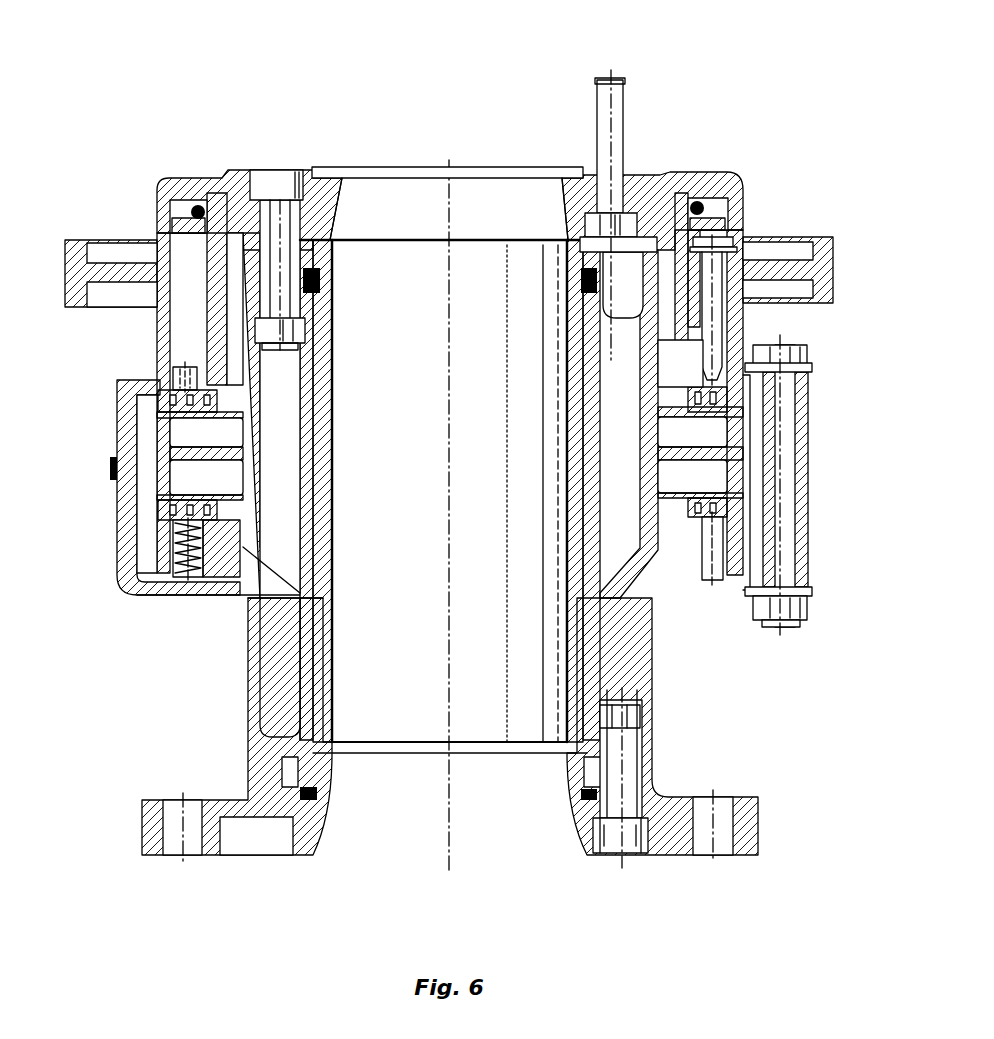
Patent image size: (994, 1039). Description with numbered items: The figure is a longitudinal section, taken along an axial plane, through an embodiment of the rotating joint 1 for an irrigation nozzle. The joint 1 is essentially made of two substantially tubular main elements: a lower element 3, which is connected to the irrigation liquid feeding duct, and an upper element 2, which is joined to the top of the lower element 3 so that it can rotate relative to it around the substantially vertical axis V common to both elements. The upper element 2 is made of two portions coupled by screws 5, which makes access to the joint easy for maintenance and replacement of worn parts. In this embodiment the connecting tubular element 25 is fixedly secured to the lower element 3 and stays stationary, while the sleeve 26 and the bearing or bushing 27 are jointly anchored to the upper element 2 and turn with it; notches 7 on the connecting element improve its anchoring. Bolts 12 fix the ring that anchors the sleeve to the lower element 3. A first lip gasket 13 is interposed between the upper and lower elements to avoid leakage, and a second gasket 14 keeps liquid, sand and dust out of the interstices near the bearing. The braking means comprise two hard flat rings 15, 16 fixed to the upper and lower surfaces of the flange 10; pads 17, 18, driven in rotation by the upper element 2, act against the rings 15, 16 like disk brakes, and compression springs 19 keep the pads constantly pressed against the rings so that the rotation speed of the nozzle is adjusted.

The rotating joint 1 is at (670, 68).
The upper element 2 is at (727, 170).
The lower element 3 is at (682, 786).
The screws 5 is at (790, 432).
The notches 7 is at (320, 758).
The flange 10 is at (112, 468).
The bolts 12 is at (273, 182).
The first lip gasket 13 is at (636, 216).
The second gasket 14 is at (705, 209).
The ring 15 is at (163, 415).
The ring 16 is at (160, 498).
The pad 17 is at (175, 385).
The pad 18 is at (173, 522).
The compression springs 19 is at (205, 560).
The connecting tubular element 25 is at (488, 238).
The sleeve 26 is at (200, 205).
The bushing 27 is at (292, 598).
The vertical axis V is at (447, 215).